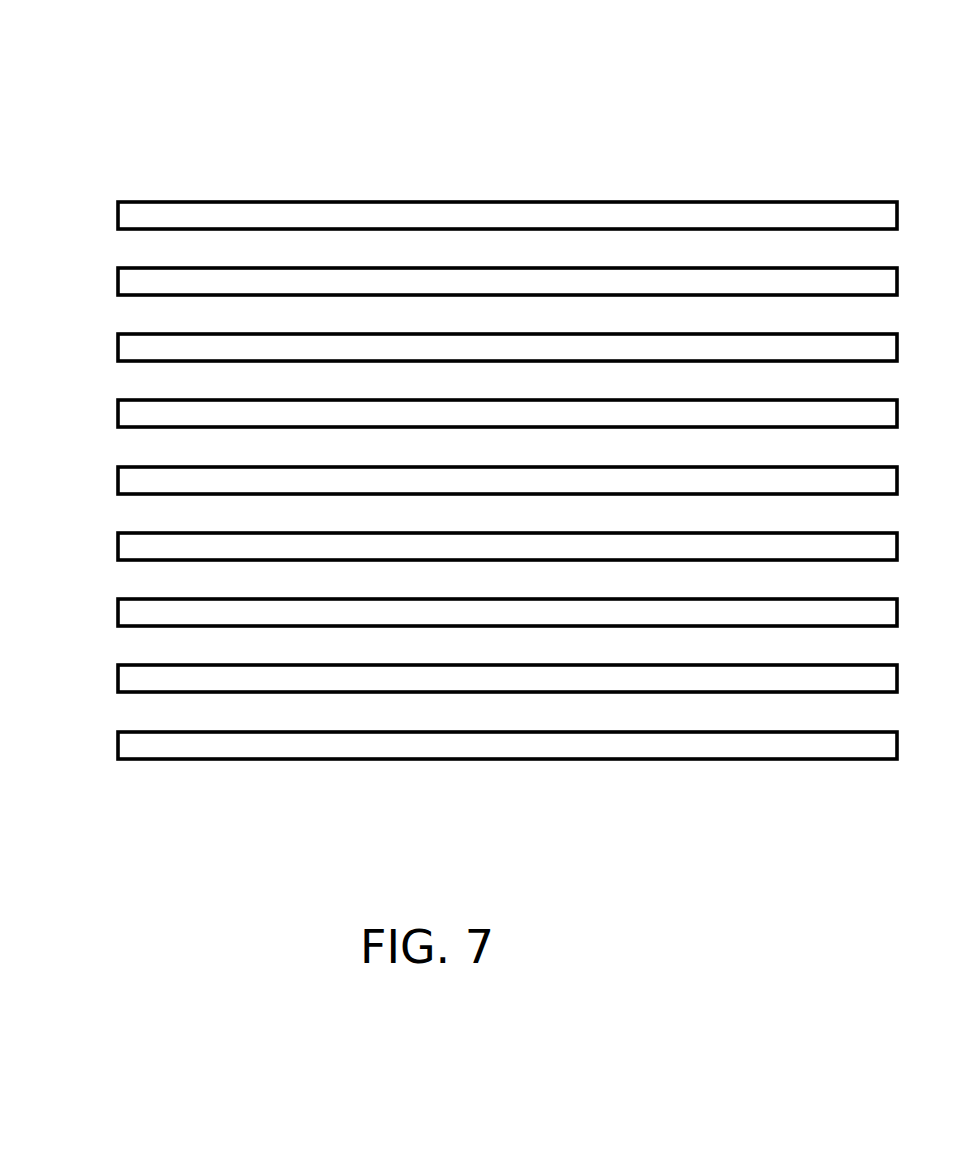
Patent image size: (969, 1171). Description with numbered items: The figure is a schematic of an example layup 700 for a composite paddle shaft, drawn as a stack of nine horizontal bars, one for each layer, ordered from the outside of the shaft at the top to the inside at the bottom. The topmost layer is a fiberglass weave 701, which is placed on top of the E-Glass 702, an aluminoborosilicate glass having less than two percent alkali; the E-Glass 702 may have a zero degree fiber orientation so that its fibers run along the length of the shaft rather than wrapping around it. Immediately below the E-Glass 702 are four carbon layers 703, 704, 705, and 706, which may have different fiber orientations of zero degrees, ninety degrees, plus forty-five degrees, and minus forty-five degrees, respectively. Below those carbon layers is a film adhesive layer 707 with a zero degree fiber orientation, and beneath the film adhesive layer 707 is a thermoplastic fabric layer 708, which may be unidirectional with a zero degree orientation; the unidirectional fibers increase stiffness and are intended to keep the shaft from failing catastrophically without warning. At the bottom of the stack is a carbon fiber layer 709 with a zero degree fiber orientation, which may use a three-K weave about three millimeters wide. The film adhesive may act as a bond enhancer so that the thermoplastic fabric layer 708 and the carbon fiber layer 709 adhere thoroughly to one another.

The layup 700 is at (316, 61).
The fiberglass weave 701 is at (118, 213).
The E-Glass 702 is at (118, 279).
The carbon layer 703 is at (118, 345).
The carbon layer 704 is at (118, 411).
The carbon layer 705 is at (118, 478).
The carbon layer 706 is at (118, 544).
The film adhesive layer 707 is at (118, 610).
The thermoplastic fabric layer 708 is at (118, 676).
The carbon fiber layer 709 is at (118, 743).